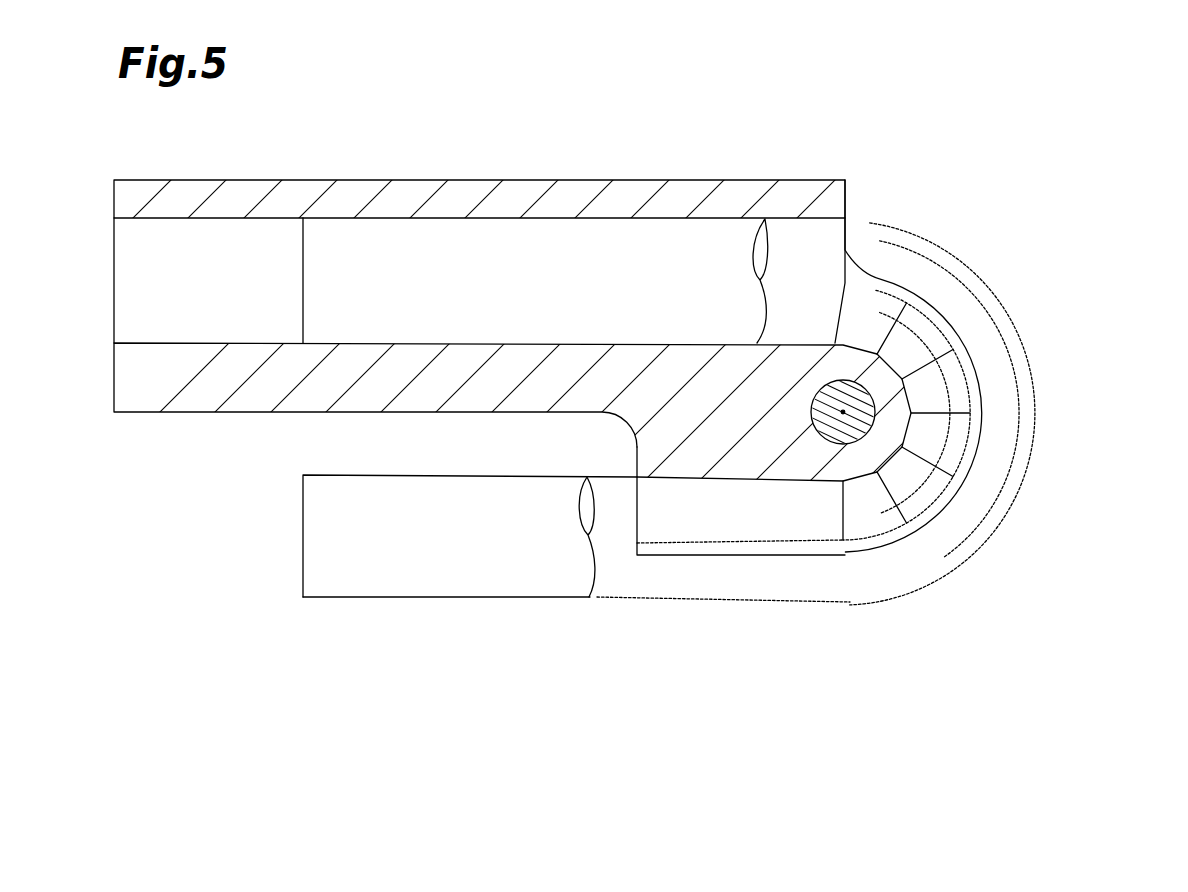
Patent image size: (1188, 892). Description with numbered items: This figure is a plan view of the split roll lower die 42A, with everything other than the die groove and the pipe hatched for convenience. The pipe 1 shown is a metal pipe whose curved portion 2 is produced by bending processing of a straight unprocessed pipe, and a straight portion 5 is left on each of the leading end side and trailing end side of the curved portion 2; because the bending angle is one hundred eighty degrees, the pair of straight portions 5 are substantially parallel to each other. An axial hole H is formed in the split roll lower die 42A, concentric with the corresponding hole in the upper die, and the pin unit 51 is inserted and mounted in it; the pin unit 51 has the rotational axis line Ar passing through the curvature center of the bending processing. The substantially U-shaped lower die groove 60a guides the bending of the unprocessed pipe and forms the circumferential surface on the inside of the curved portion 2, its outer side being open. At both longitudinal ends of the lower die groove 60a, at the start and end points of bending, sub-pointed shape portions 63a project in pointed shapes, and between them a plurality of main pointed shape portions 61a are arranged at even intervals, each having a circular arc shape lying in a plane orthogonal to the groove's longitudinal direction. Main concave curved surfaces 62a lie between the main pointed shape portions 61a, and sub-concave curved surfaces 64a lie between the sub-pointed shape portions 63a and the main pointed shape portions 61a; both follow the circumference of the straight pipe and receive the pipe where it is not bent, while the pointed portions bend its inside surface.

The pipe 1 is at (494, 600).
The curved portion 2 is at (967, 253).
The straight portion 5 is at (373, 218).
The split roll lower die 42A is at (470, 180).
The pin unit 51 is at (816, 449).
The lower die groove 60a is at (948, 296).
The main pointed shape portions 61a is at (930, 325).
The main concave curved surfaces 62a is at (955, 340).
The sub-pointed shape portions 63a is at (866, 292).
The sub-concave curved surfaces 64a is at (872, 300).
The rotational axis line Ar is at (843, 414).
The axial holes H is at (852, 415).